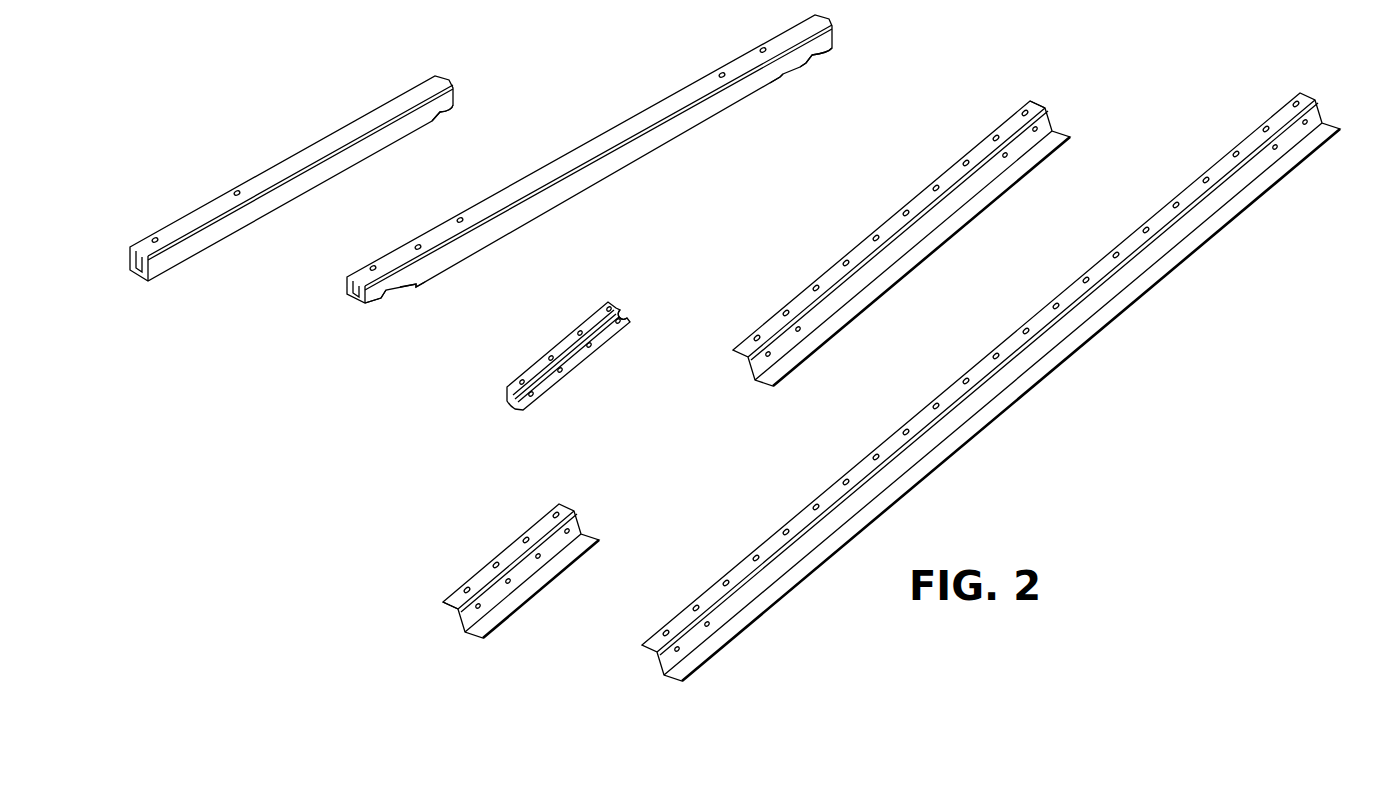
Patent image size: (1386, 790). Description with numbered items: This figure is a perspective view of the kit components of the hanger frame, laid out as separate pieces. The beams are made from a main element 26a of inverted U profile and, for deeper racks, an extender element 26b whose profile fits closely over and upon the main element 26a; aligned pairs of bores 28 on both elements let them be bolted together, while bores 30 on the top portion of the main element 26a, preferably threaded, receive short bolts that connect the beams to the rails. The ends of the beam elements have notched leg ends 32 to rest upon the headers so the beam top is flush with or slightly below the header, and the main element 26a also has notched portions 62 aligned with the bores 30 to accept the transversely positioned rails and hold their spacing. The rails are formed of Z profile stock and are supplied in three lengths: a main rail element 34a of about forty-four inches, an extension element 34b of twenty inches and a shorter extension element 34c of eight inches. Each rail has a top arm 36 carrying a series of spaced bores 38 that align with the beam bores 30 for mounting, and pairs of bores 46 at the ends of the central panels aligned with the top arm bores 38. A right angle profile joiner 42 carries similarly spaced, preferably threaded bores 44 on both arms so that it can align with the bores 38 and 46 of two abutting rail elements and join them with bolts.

The main element 26a is at (597, 136).
The extender element 26b is at (312, 143).
The bores 28 is at (237, 190).
The bores 30 is at (763, 47).
The notched leg ends 32 is at (444, 114).
The notched portions 62 is at (773, 82).
The joiner 42 is at (612, 301).
The bores 44 is at (627, 319).
The main rail element 34a is at (1016, 403).
The extension element 34b is at (882, 296).
The extension element 34c is at (592, 558).
The top arm 36 is at (1036, 97).
The bores 38 is at (995, 135).
The bores 46 is at (800, 332).